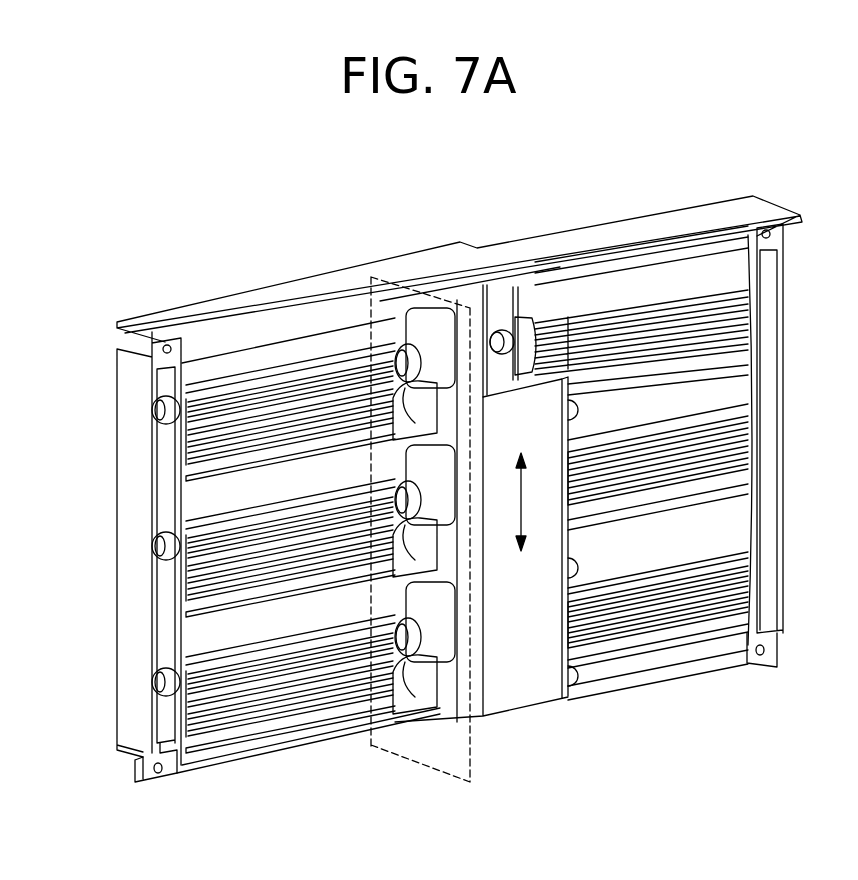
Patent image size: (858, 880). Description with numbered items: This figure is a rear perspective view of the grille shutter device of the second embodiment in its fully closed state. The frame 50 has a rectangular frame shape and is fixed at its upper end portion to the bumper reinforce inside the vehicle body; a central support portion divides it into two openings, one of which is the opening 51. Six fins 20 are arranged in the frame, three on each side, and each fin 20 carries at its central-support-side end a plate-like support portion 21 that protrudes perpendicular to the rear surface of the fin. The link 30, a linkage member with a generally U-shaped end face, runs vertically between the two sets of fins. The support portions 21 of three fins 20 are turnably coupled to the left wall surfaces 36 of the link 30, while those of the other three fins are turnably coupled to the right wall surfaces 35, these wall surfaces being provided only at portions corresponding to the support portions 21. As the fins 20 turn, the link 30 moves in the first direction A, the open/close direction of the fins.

The fins 20 is at (213, 373).
The support portion 21 is at (393, 417).
The link 30 is at (540, 695).
The right wall surfaces 35 is at (562, 420).
The left wall surfaces 36 is at (436, 385).
The frame 50 is at (762, 207).
The opening 51 is at (400, 367).